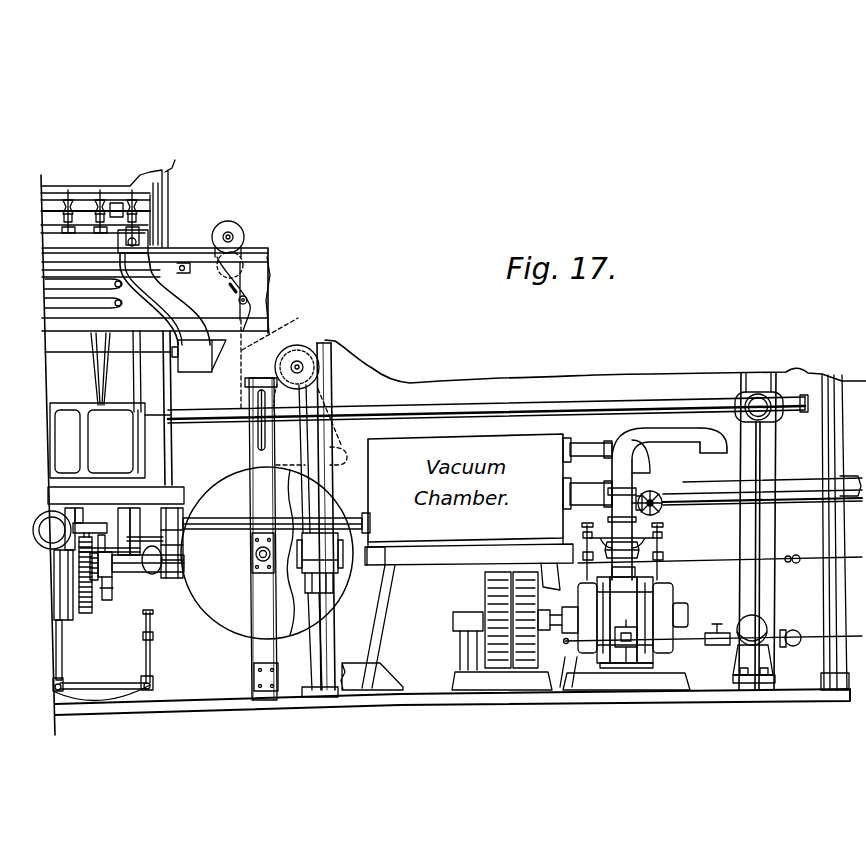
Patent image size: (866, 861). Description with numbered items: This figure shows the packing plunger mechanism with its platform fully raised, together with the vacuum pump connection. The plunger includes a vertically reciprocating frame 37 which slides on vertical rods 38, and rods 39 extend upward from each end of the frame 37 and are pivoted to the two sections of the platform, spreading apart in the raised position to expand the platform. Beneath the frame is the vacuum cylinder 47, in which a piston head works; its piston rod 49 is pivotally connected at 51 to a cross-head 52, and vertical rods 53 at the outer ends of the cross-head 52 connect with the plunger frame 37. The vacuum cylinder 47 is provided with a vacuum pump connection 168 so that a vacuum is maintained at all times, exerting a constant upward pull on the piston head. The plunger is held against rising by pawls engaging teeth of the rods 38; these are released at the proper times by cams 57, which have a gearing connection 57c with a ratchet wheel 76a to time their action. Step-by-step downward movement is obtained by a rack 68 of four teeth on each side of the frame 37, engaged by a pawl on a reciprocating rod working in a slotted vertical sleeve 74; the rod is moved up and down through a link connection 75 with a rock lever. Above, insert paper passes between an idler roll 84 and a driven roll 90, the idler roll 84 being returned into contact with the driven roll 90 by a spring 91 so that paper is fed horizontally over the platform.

The vertically reciprocating frame 37 is at (58, 408).
The vertical rods 38 is at (138, 388).
The rods 39 is at (104, 367).
The vacuum cylinder 47 is at (58, 572).
The piston rod 49 is at (58, 640).
The pivotal connection 51 is at (55, 688).
The cross-head 52 is at (95, 695).
The vertical rods 53 is at (152, 652).
The cams 57 is at (147, 574).
The gearing connection 57c is at (86, 595).
The rack 68 is at (170, 468).
The vertical sleeve 74 is at (163, 462).
The link connection 75 is at (177, 540).
The ratchet wheel 76a is at (95, 585).
The idler roll 84 is at (240, 272).
The driven roll 90 is at (240, 228).
The spring 91 is at (294, 389).
The vacuum pump connection 168 is at (662, 595).